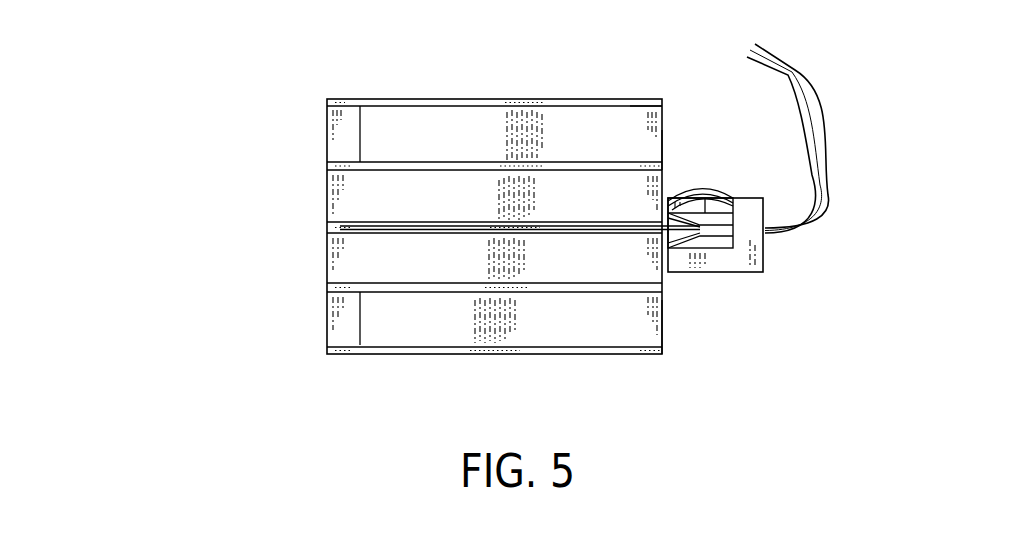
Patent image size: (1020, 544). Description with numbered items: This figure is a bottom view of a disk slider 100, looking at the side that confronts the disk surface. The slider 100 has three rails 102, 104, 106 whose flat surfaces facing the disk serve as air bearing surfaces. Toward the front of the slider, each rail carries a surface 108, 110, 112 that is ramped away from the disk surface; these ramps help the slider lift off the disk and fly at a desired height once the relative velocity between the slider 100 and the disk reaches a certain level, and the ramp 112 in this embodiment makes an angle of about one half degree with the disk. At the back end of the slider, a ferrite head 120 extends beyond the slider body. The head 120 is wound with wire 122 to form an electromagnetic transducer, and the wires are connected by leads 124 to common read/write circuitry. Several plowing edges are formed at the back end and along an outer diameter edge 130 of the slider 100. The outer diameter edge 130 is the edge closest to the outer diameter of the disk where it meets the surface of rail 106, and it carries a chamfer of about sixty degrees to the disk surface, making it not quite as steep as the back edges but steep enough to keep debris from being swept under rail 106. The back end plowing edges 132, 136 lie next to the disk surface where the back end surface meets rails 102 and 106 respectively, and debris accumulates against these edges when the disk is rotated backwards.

The slider 100 is at (166, 220).
The rail 102 is at (378, 327).
The rail 104 is at (380, 232).
The rail 106 is at (378, 131).
The ramped surface 108 is at (331, 312).
The ramped surface 110 is at (350, 225).
The ramp 112 is at (338, 147).
The ferrite head 120 is at (765, 255).
The wire 122 is at (737, 188).
The leads 124 is at (825, 133).
The outer diameter edge 130 is at (630, 110).
The back end plowing edge 132 is at (663, 330).
The back end plowing edge 136 is at (663, 150).